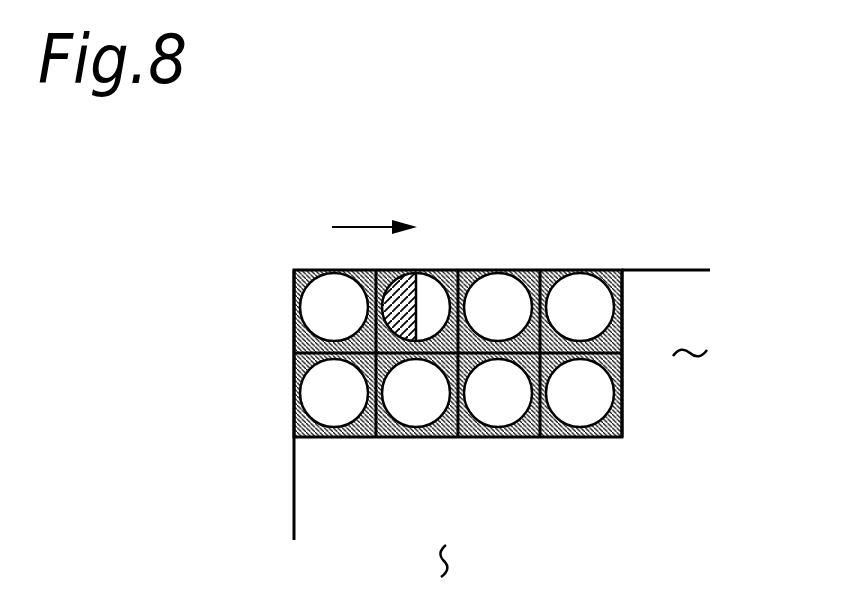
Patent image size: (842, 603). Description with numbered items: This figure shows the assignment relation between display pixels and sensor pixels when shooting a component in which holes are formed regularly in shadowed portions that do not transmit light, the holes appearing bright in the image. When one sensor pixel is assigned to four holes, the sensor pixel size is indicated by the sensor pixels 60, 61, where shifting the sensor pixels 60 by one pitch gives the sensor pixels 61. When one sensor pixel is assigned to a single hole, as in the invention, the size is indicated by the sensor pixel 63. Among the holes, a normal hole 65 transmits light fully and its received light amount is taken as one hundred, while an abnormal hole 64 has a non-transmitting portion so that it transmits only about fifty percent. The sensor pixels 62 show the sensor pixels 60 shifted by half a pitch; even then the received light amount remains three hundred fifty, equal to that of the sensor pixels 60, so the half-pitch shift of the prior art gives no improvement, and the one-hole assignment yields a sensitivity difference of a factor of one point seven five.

The sensor pixels 60 is at (457, 437).
The sensor pixels 61 is at (457, 437).
The sensor pixels 62 is at (373, 465).
The sensor pixel size 63 is at (313, 268).
The abnormal hole 64 is at (423, 292).
The normal hole 65 is at (498, 292).